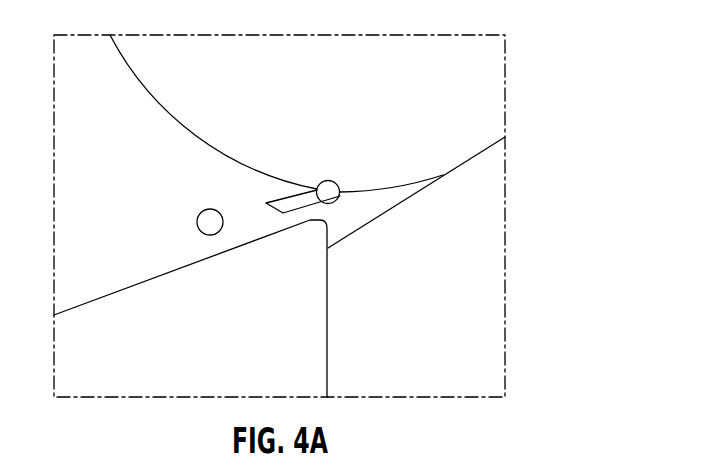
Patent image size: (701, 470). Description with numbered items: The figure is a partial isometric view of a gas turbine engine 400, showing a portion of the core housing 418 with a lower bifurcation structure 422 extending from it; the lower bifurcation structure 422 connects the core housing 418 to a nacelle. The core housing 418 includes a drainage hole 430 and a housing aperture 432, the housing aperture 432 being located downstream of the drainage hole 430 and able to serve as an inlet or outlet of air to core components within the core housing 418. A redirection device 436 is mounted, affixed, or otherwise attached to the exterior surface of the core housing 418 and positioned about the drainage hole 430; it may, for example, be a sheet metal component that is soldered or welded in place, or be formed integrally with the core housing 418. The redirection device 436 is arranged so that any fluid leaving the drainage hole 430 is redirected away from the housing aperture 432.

The gas turbine engine 400 is at (513, 31).
The core housing 418 is at (395, 204).
The lower bifurcation structure 422 is at (327, 322).
The drainage hole 430 is at (338, 184).
The housing aperture 432 is at (198, 218).
The redirection device 436 is at (288, 202).